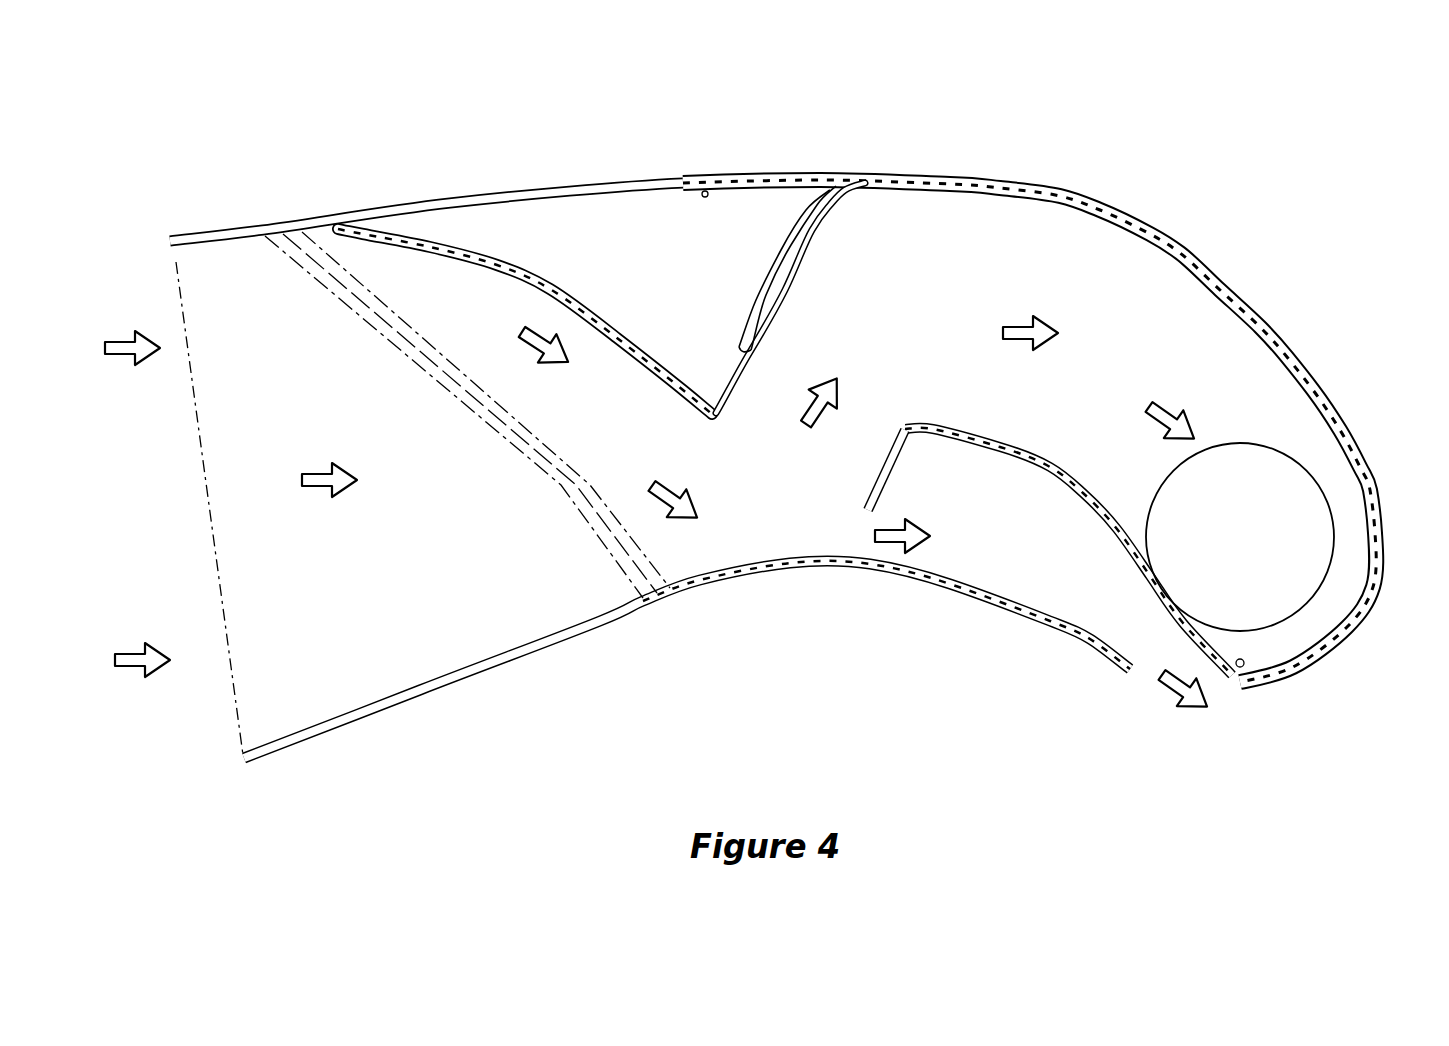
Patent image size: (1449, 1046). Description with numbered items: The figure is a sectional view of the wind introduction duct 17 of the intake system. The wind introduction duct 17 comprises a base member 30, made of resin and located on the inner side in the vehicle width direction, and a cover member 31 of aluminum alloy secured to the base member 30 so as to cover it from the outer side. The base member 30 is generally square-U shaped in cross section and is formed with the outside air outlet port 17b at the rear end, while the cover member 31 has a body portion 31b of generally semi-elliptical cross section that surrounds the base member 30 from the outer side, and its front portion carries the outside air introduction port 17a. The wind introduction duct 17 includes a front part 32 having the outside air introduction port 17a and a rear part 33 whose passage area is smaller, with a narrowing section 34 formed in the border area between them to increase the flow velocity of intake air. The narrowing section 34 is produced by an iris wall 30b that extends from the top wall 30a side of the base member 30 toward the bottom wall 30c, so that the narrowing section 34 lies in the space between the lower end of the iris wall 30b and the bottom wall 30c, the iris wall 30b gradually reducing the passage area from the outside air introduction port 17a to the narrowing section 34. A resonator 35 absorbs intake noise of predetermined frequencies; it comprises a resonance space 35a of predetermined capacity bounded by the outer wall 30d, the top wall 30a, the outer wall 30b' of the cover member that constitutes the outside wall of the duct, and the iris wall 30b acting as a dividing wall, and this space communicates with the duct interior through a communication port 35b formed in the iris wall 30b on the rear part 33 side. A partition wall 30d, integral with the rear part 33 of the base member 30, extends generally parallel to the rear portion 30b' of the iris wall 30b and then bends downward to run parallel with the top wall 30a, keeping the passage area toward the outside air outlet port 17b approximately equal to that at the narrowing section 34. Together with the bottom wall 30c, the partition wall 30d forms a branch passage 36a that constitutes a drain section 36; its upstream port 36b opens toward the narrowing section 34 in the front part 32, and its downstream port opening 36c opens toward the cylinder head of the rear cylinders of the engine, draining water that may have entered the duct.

The wind introduction duct 17 is at (1168, 192).
The outside air introduction port 17a is at (176, 243).
The outside air outlet port 17b is at (1333, 543).
The base member 30 is at (1222, 298).
The top wall 30a is at (703, 188).
The iris wall 30b is at (525, 330).
The outer wall of the cover member 30b' is at (808, 269).
The bottom wall 30c is at (785, 556).
The partition wall 30d is at (583, 232).
The cover member 31 is at (1354, 416).
The body portion 31b is at (1178, 245).
The front part 32 is at (427, 582).
The rear part 33 is at (984, 289).
The narrowing section 34 is at (735, 496).
The resonator 35 is at (911, 76).
The resonance space 35a is at (763, 207).
The communication port 35b is at (790, 228).
The drain section 36 is at (1147, 704).
The branch passage 36a is at (1022, 583).
The upstream port 36b is at (865, 510).
The downstream port opening 36c is at (1232, 688).